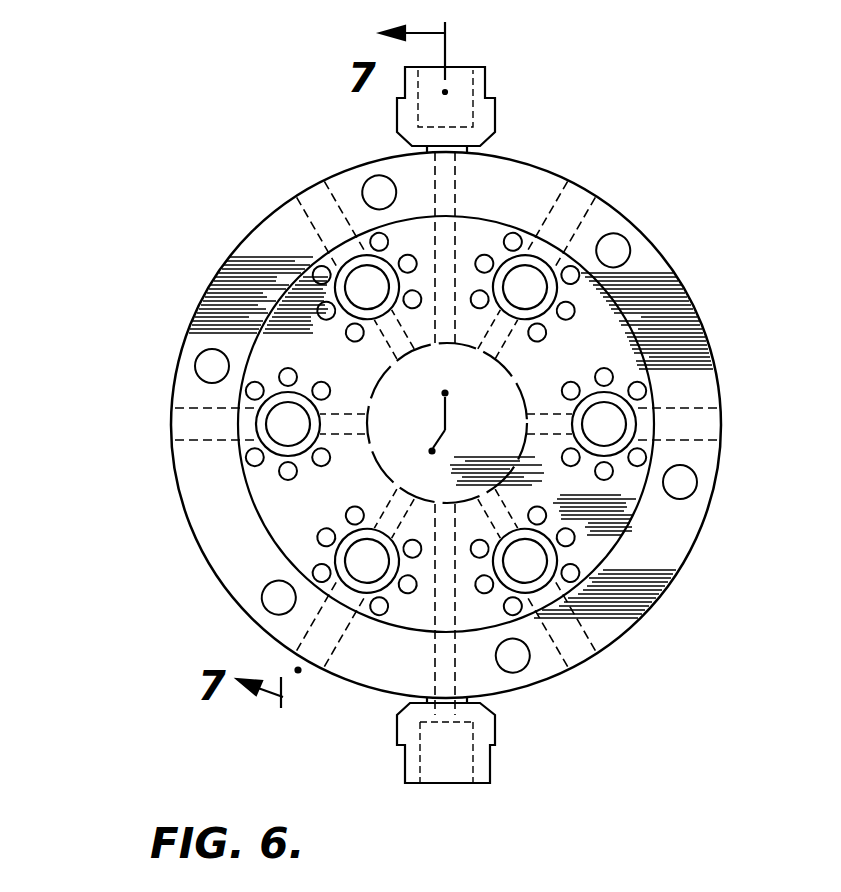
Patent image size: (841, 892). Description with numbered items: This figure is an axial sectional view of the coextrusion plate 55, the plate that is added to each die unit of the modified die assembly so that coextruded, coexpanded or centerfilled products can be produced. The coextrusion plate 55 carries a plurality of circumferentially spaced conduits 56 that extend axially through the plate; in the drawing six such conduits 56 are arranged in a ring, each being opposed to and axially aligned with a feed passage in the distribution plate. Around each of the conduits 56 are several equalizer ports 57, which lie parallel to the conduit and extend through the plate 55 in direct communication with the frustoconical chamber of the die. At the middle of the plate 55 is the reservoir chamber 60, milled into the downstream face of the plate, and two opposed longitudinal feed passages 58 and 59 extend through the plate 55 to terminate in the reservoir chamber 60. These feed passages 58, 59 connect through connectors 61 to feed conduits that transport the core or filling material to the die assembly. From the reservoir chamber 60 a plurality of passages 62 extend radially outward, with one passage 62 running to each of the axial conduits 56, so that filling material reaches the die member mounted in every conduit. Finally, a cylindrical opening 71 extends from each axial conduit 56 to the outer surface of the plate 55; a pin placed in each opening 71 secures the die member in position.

The coextrusion plate 55 is at (679, 278).
The conduits 56 is at (520, 273).
The equalizer ports 57 is at (636, 393).
The longitudinal feed passage 58 is at (452, 182).
The longitudinal feed passage 59 is at (440, 665).
The reservoir chamber 60 is at (498, 445).
The connectors 61 is at (483, 72).
The passages 62 is at (508, 347).
The cylindrical opening 71 is at (707, 417).